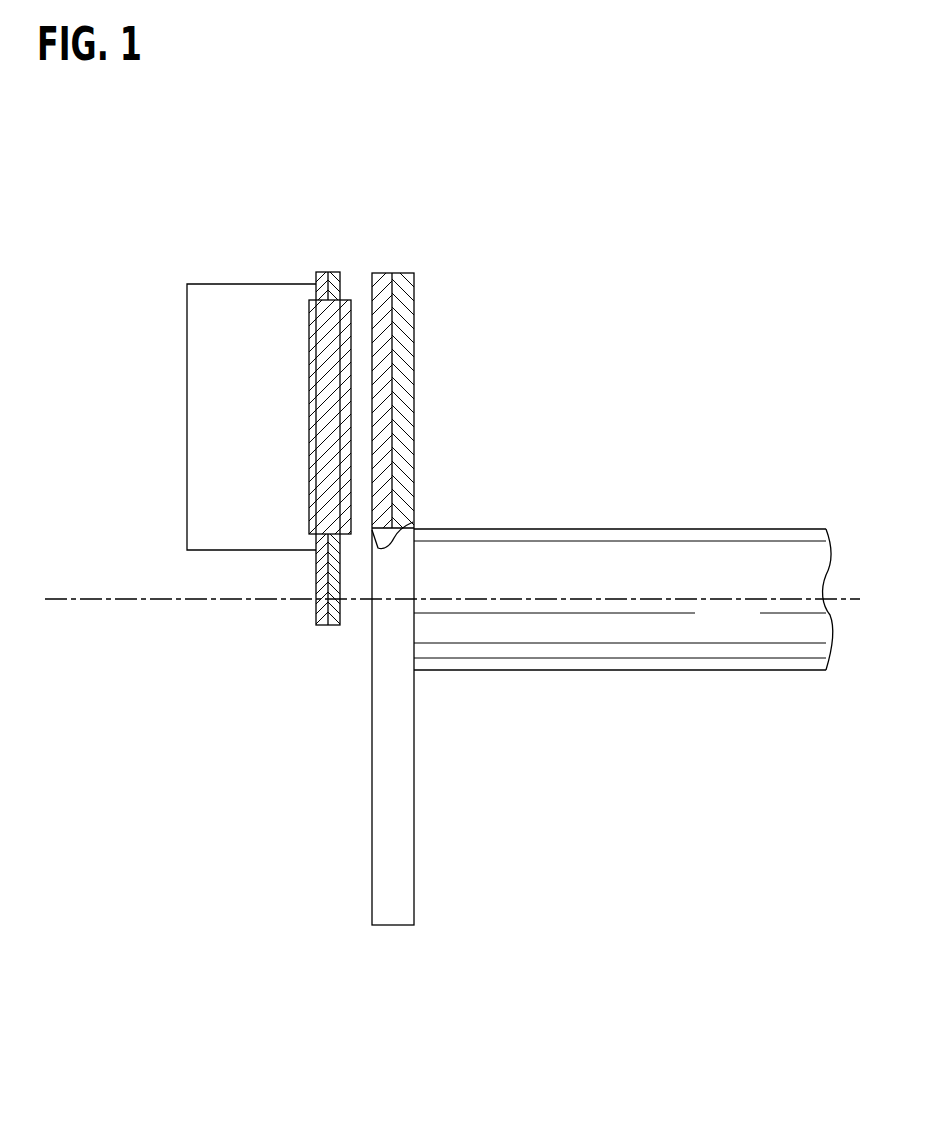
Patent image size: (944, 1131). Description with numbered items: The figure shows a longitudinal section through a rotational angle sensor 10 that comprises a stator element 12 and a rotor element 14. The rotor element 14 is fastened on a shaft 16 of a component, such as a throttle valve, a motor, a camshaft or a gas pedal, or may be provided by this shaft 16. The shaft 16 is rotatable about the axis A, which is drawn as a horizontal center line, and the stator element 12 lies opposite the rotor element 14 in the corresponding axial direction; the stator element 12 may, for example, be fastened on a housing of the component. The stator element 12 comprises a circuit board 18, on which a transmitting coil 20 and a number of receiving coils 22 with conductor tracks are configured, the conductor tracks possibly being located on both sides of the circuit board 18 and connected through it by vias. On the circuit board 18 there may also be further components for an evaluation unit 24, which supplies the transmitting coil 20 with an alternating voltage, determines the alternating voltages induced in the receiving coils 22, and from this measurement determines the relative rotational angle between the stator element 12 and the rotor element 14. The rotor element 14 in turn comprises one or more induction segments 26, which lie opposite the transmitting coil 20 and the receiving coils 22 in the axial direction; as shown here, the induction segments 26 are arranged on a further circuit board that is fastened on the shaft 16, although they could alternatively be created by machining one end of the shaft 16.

The rotational angle sensor 10 is at (700, 233).
The stator element 12 is at (206, 246).
The rotor element 14 is at (477, 253).
The shaft 16 is at (636, 628).
The circuit board 18 is at (318, 570).
The transmitting coil 20 is at (351, 335).
The receiving coils 22 is at (309, 336).
The evaluation unit 24 is at (228, 420).
The induction segments 26 is at (383, 418).
The axis A is at (98, 601).